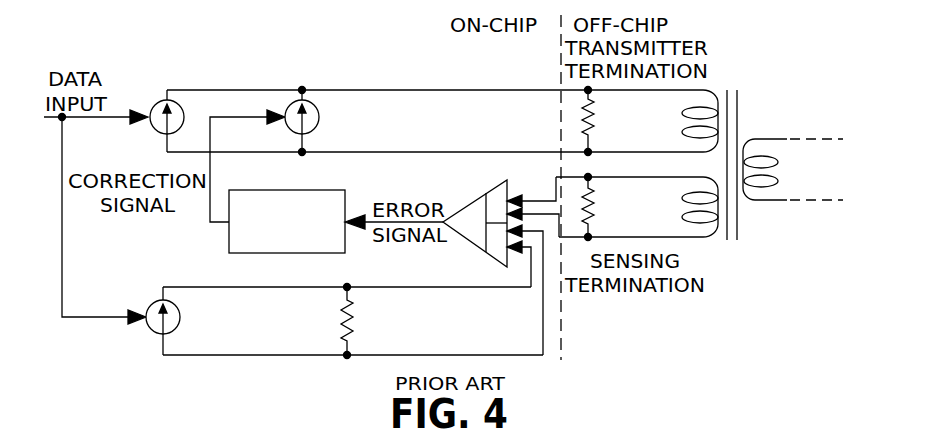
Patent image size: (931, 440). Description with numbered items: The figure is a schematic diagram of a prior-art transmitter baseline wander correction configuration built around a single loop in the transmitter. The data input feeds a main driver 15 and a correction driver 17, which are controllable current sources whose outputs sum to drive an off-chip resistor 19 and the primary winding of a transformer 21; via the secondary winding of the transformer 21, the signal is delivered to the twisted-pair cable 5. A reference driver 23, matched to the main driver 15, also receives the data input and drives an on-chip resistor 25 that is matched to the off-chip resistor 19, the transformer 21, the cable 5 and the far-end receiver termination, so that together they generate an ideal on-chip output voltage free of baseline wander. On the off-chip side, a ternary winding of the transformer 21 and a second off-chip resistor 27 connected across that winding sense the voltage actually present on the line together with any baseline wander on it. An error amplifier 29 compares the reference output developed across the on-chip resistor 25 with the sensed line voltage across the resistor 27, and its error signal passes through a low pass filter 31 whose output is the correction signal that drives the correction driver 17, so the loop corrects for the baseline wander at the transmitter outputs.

The twisted-pair cable 5 is at (818, 138).
The main driver 15 is at (163, 104).
The correction driver 17 is at (292, 104).
The off-chip resistor 19 is at (593, 113).
The transformer 21 is at (752, 105).
The reference driver 23 is at (150, 331).
The on-chip resistor 25 is at (344, 308).
The second off-chip resistor 27 is at (593, 211).
The error amplifier 29 is at (477, 200).
The low pass filter 31 is at (229, 240).